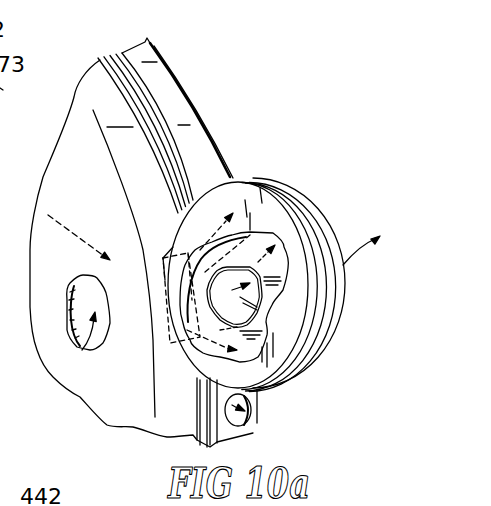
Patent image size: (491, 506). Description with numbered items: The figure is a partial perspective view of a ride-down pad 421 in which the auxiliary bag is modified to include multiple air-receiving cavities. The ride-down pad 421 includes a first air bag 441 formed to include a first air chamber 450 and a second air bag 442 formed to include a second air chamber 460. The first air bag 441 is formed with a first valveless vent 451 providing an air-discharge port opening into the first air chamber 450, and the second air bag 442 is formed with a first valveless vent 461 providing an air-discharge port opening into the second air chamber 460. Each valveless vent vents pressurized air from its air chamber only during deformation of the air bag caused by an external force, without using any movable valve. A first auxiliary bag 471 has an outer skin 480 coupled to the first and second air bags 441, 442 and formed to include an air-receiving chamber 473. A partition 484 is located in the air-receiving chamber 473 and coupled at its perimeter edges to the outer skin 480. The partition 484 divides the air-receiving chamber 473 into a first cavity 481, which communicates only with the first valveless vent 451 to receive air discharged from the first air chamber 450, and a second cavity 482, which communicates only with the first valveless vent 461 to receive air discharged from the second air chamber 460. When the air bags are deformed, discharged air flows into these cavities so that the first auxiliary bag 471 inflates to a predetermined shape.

The ride-down pad 421 is at (231, 85).
The first air bag 441 is at (181, 55).
The second air bag 442 is at (104, 94).
The first valveless vent 451 is at (257, 201).
The first auxiliary bag 471 is at (315, 186).
The air-receiving chamber 473 is at (283, 261).
The first valveless vent 461 is at (170, 258).
The partition 484 is at (230, 295).
The second cavity 482 is at (197, 354).
The second air chamber 460 is at (82, 350).
The first cavity 481 is at (260, 295).
The outer skin 480 is at (290, 346).
The first air chamber 450 is at (253, 417).